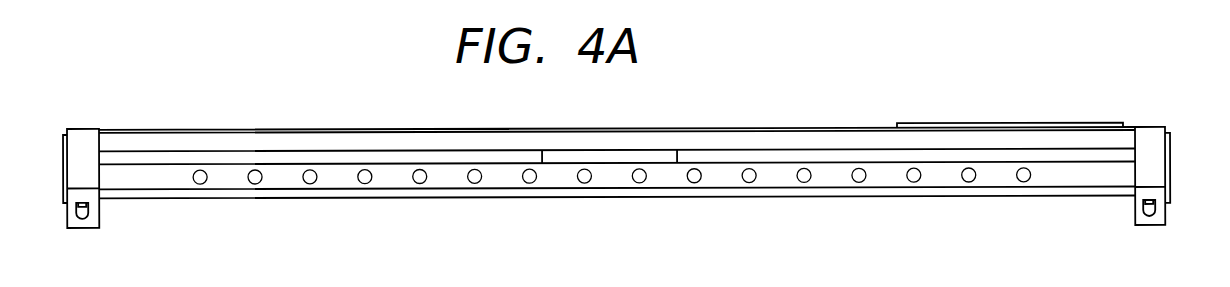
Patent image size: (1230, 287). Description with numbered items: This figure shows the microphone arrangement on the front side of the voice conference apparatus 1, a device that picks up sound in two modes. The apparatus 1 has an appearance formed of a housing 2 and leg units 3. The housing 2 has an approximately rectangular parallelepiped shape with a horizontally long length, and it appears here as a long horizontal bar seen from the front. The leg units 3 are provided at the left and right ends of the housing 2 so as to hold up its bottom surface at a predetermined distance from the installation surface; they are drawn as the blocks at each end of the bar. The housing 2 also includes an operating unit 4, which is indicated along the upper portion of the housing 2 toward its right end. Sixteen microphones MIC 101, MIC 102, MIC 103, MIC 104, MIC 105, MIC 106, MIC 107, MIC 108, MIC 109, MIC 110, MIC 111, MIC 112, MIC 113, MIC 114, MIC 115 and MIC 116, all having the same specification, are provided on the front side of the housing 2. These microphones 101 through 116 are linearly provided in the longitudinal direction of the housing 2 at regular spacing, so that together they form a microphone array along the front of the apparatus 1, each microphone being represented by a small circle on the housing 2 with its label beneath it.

The voice conference apparatus 1 is at (636, 153).
The housing 2 is at (152, 142).
The leg units 3 is at (77, 229).
The operating unit 4 is at (947, 112).
The microphone MIC101 101 is at (200, 184).
The microphone MIC102 102 is at (255, 184).
The microphone MIC103 103 is at (310, 184).
The microphone MIC104 104 is at (365, 184).
The microphone MIC105 105 is at (420, 184).
The microphone MIC106 106 is at (474, 184).
The microphone MIC107 107 is at (529, 184).
The microphone MIC108 108 is at (584, 184).
The microphone MIC109 109 is at (639, 184).
The microphone MIC110 110 is at (694, 184).
The microphone MIC111 111 is at (749, 184).
The microphone MIC112 112 is at (804, 184).
The microphone MIC113 113 is at (859, 184).
The microphone MIC114 114 is at (914, 184).
The microphone MIC115 115 is at (969, 184).
The microphone MIC116 116 is at (1024, 184).